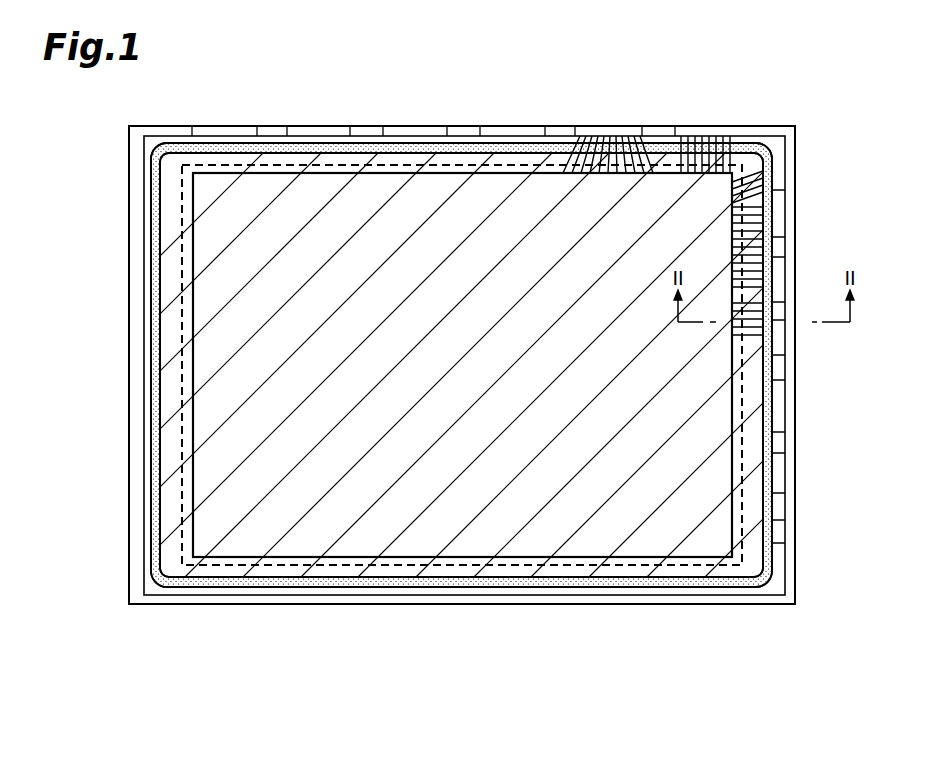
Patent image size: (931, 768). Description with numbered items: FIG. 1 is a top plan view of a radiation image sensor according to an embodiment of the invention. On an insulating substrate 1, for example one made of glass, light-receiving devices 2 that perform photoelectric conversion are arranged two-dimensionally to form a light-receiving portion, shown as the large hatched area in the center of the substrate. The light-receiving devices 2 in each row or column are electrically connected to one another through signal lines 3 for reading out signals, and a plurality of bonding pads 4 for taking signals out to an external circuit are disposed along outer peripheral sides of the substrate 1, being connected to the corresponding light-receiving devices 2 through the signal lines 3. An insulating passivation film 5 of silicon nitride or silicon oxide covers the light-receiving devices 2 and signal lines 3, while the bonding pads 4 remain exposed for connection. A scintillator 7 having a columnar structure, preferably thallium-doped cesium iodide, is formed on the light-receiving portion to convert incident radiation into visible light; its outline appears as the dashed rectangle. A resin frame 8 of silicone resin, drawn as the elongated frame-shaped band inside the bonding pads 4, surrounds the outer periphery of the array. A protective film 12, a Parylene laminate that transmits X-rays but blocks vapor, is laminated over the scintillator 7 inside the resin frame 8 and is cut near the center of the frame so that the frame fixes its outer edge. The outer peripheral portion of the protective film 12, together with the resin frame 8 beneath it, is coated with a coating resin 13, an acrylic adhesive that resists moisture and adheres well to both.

The insulating substrate 1 is at (662, 108).
The light-receiving device 2 is at (486, 550).
The signal line 3 is at (752, 166).
The bonding pad 4 is at (793, 175).
The insulating passivation film 5 is at (345, 138).
The scintillator 7 is at (745, 392).
The resin frame 8 is at (772, 466).
The coating resin 13 is at (461, 365).
The protective film 12 is at (582, 570).